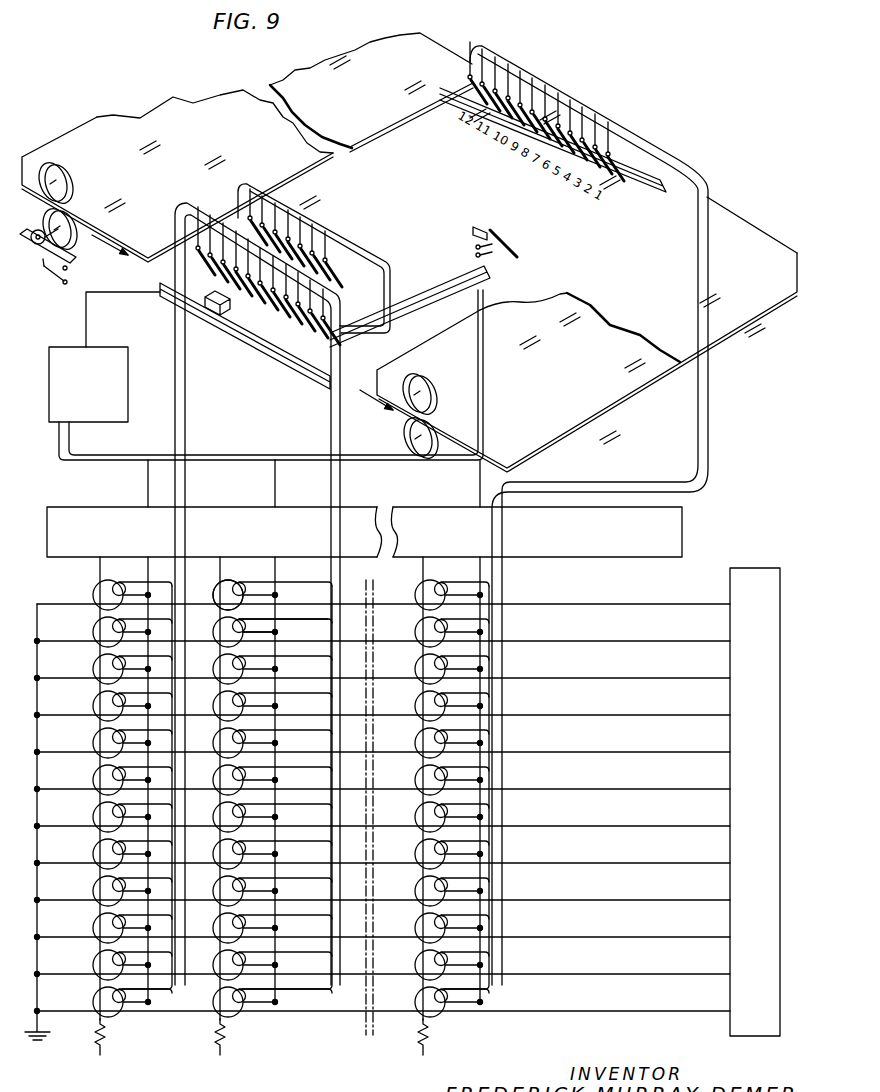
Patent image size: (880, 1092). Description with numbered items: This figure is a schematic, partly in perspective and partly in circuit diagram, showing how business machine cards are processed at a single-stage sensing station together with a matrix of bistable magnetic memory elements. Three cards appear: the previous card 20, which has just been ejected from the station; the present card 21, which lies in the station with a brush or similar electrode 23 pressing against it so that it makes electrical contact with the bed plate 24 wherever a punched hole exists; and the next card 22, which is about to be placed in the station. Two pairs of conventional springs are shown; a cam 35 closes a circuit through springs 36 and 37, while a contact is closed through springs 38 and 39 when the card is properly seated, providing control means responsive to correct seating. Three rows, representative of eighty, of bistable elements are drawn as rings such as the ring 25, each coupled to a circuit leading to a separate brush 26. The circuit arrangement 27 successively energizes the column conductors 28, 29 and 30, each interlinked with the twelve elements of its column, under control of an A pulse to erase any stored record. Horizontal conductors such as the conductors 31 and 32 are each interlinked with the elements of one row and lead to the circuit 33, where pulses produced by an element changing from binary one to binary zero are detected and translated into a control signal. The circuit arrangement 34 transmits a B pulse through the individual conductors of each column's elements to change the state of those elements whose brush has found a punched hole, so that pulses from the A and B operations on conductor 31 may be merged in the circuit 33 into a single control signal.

The previous card 20 is at (560, 425).
The present card 21 is at (278, 334).
The next card 22 is at (146, 256).
The brush electrode 23 is at (620, 167).
The bed plate 24 is at (320, 378).
The ring 25 is at (232, 588).
The separate brush 26 is at (236, 203).
The A pulse circuit arrangement 27 is at (55, 531).
The column conductor 28 is at (98, 575).
The column conductor 29 is at (218, 575).
The column conductor 30 is at (421, 574).
The horizontal conductor 31 is at (187, 610).
The horizontal conductor 32 is at (187, 647).
The detecting circuit 33 is at (745, 574).
The B pulse circuit arrangement 34 is at (49, 397).
The cam 35 is at (37, 230).
The spring 36 is at (50, 280).
The spring 37 is at (42, 258).
The spring 38 is at (474, 266).
The spring 39 is at (475, 249).